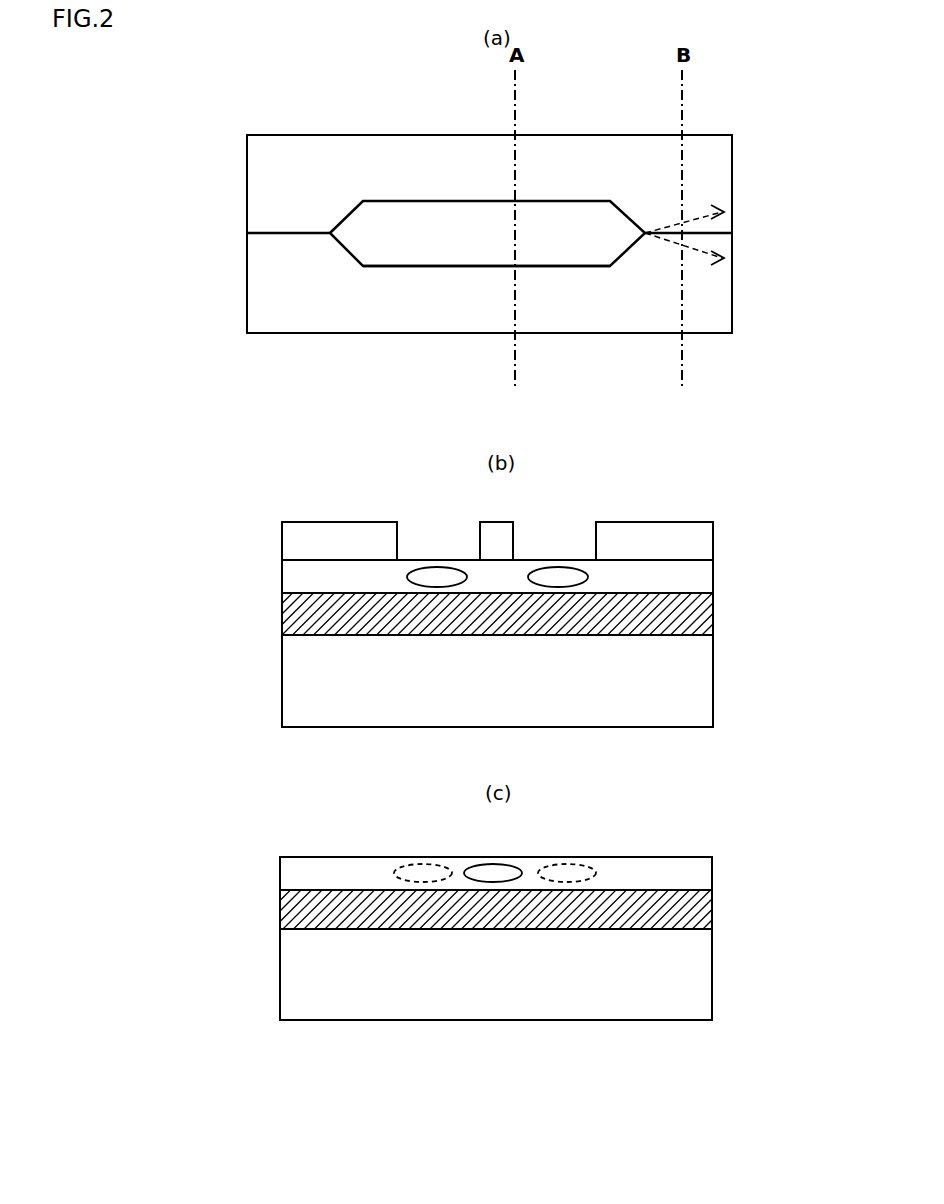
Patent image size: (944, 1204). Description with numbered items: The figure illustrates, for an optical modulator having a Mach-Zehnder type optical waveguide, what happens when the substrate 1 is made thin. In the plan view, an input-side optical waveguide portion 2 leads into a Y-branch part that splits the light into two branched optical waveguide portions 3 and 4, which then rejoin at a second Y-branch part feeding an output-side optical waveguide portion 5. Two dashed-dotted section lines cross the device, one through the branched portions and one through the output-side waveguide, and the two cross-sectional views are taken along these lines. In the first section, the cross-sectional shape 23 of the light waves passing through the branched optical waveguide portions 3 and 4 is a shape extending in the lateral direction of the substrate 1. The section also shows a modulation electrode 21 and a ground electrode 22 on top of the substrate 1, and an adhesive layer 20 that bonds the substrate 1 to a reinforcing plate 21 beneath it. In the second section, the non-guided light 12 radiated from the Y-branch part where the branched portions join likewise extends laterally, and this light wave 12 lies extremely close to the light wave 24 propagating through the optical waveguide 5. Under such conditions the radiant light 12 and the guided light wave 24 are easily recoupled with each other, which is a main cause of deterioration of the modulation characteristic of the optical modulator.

The substrate 1 is at (712, 160).
The input-side optical waveguide portion 2 is at (265, 323).
The branched optical waveguide portion 3 is at (420, 201).
The branched optical waveguide portion 4 is at (445, 266).
The output-side optical waveguide portion 5 is at (720, 234).
The non-guided light 12 is at (697, 252).
The adhesive layer 20 is at (687, 612).
The modulation electrode 21 is at (497, 543).
The ground electrode 22 is at (655, 542).
The guided light 23 is at (497, 669).
The guided light 24 is at (493, 873).